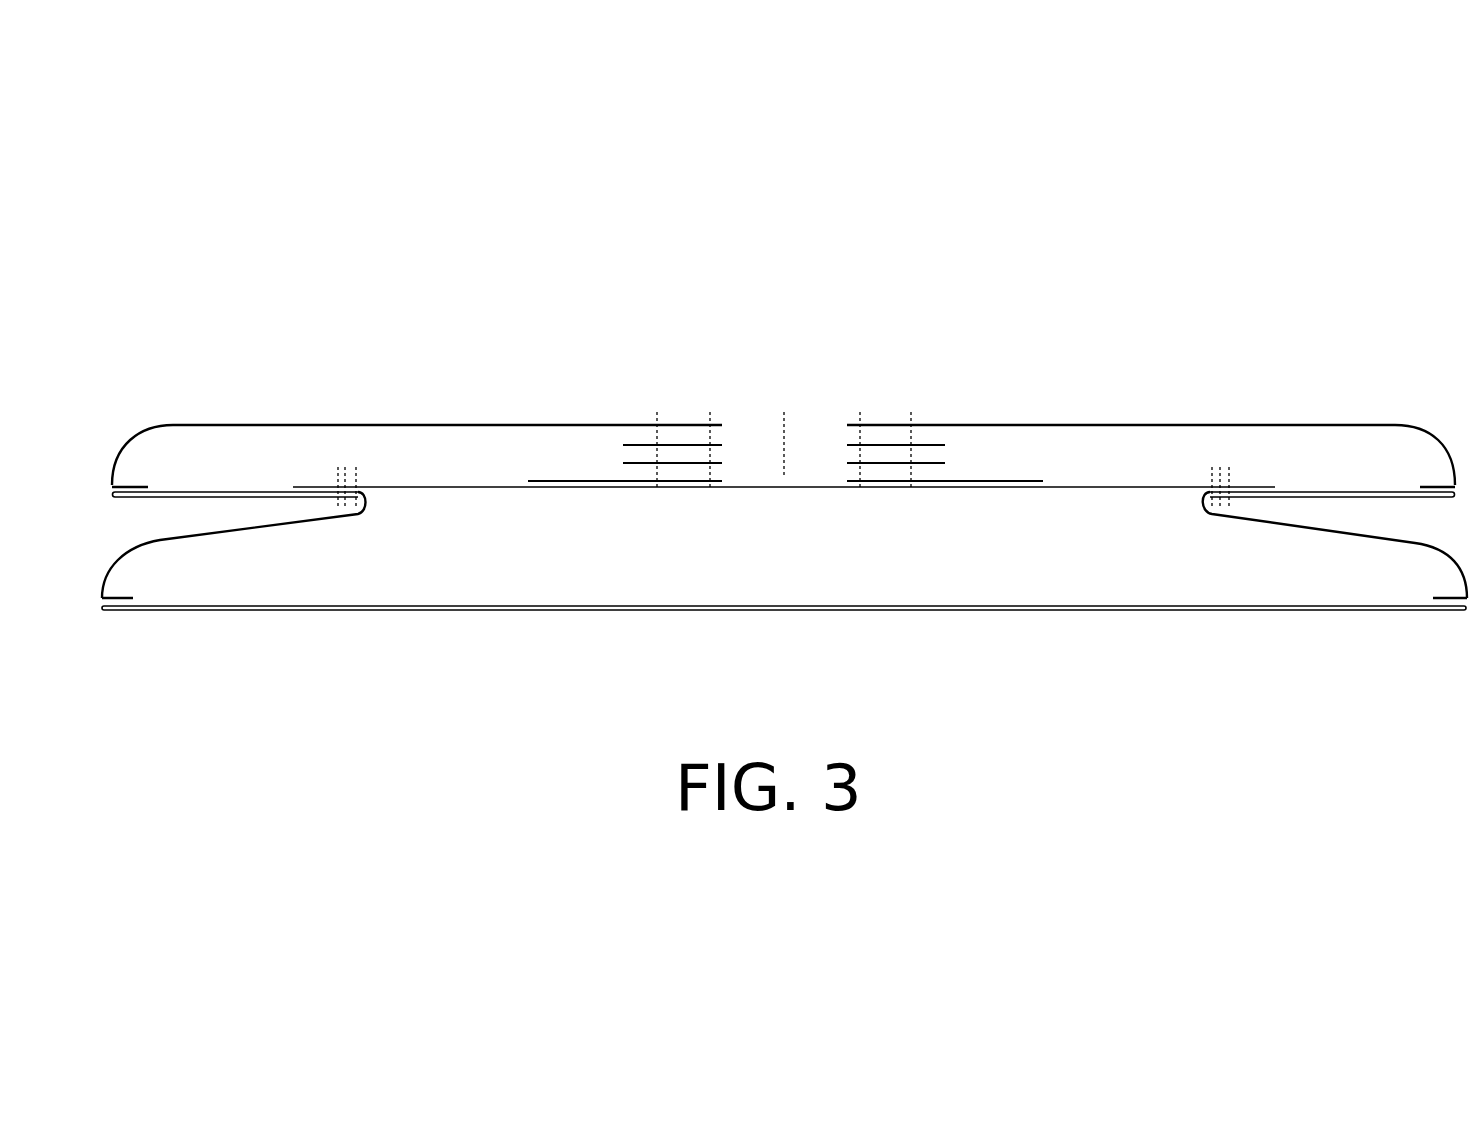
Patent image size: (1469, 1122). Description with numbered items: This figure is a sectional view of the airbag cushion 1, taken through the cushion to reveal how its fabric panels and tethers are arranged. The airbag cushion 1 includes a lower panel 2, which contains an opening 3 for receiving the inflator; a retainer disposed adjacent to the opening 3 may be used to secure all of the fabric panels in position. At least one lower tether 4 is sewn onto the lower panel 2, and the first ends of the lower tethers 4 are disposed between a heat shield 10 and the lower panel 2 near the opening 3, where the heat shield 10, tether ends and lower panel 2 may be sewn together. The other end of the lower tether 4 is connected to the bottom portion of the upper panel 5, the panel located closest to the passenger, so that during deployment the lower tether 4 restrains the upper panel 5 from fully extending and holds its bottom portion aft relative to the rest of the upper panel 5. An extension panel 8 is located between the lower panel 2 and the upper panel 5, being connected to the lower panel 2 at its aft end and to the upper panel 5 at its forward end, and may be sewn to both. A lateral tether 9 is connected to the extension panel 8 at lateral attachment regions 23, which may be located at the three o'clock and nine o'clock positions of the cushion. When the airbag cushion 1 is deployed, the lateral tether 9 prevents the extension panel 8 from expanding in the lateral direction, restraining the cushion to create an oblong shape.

The airbag cushion 1 is at (284, 179).
The lower panel 2 is at (1295, 424).
The opening 3 is at (808, 447).
The lower tether 4 is at (847, 463).
The upper panel 5 is at (1262, 611).
The extension panel 8 is at (197, 540).
The lateral tether 9 is at (1132, 487).
The heat shield 10 is at (563, 480).
The lateral attachment regions 23 is at (343, 483).